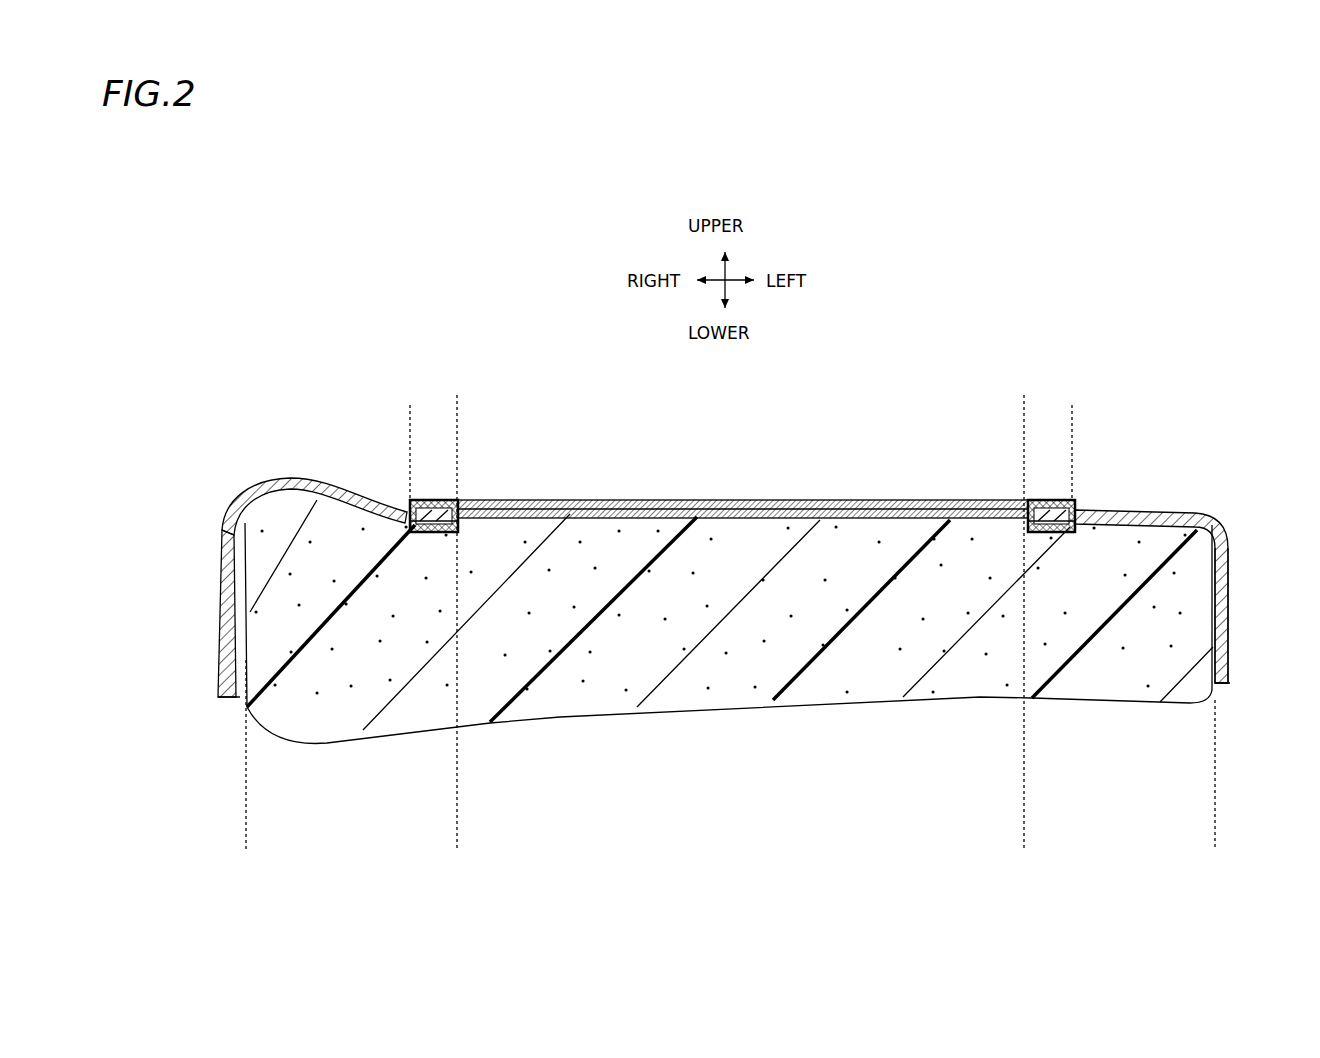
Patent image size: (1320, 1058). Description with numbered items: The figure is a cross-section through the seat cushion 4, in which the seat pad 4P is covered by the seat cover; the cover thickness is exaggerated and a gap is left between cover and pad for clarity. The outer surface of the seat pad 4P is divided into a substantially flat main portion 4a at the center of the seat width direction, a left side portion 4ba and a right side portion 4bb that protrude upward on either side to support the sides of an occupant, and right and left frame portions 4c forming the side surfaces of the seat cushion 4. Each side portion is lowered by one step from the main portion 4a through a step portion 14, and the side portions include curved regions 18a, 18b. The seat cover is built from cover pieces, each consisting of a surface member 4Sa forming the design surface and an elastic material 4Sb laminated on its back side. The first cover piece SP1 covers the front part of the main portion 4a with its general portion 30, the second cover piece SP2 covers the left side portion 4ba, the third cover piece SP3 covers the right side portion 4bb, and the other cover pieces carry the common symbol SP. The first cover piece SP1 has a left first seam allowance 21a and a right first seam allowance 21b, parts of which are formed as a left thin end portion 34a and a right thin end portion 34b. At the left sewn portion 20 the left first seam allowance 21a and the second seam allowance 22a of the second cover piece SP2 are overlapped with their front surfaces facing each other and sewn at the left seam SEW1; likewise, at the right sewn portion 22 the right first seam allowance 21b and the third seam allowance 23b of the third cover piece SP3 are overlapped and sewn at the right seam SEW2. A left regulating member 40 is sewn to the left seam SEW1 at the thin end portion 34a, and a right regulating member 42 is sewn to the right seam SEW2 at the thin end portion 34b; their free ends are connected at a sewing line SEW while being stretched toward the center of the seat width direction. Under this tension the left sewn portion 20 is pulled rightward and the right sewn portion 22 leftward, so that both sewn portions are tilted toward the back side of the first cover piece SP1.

The seat cushion 4 is at (852, 342).
The seat pad 4P is at (975, 668).
The frame portion 4c is at (222, 645).
The main portion 4a is at (1024, 831).
The right side portion 4bb is at (457, 831).
The left side portion 4ba is at (1215, 831).
The surface member 4Sa is at (545, 500).
The elastic material 4Sb is at (638, 509).
The step portion 14 is at (456, 527).
The curved region 18a is at (1024, 393).
The curved region 18b is at (457, 393).
The left sewn portion 20 is at (1173, 432).
The left first seam allowance 21a is at (1060, 503).
The second seam allowance 22a is at (1105, 511).
The right sewn portion 22 is at (393, 432).
The right first seam allowance 21b is at (430, 503).
The third seam allowance 23b is at (410, 507).
The general portion 30 is at (1024, 418).
The left thin end portion 34a is at (1072, 418).
The right thin end portion 34b is at (457, 418).
The left regulating member 40 is at (850, 520).
The right regulating member 42 is at (608, 518).
The cover piece SP is at (1268, 594).
The first cover piece SP1 is at (822, 500).
The second cover piece SP2 is at (1212, 517).
The third cover piece SP3 is at (266, 483).
The sewing line SEW is at (730, 520).
The left seam SEW1 is at (1080, 526).
The right seam SEW2 is at (378, 520).